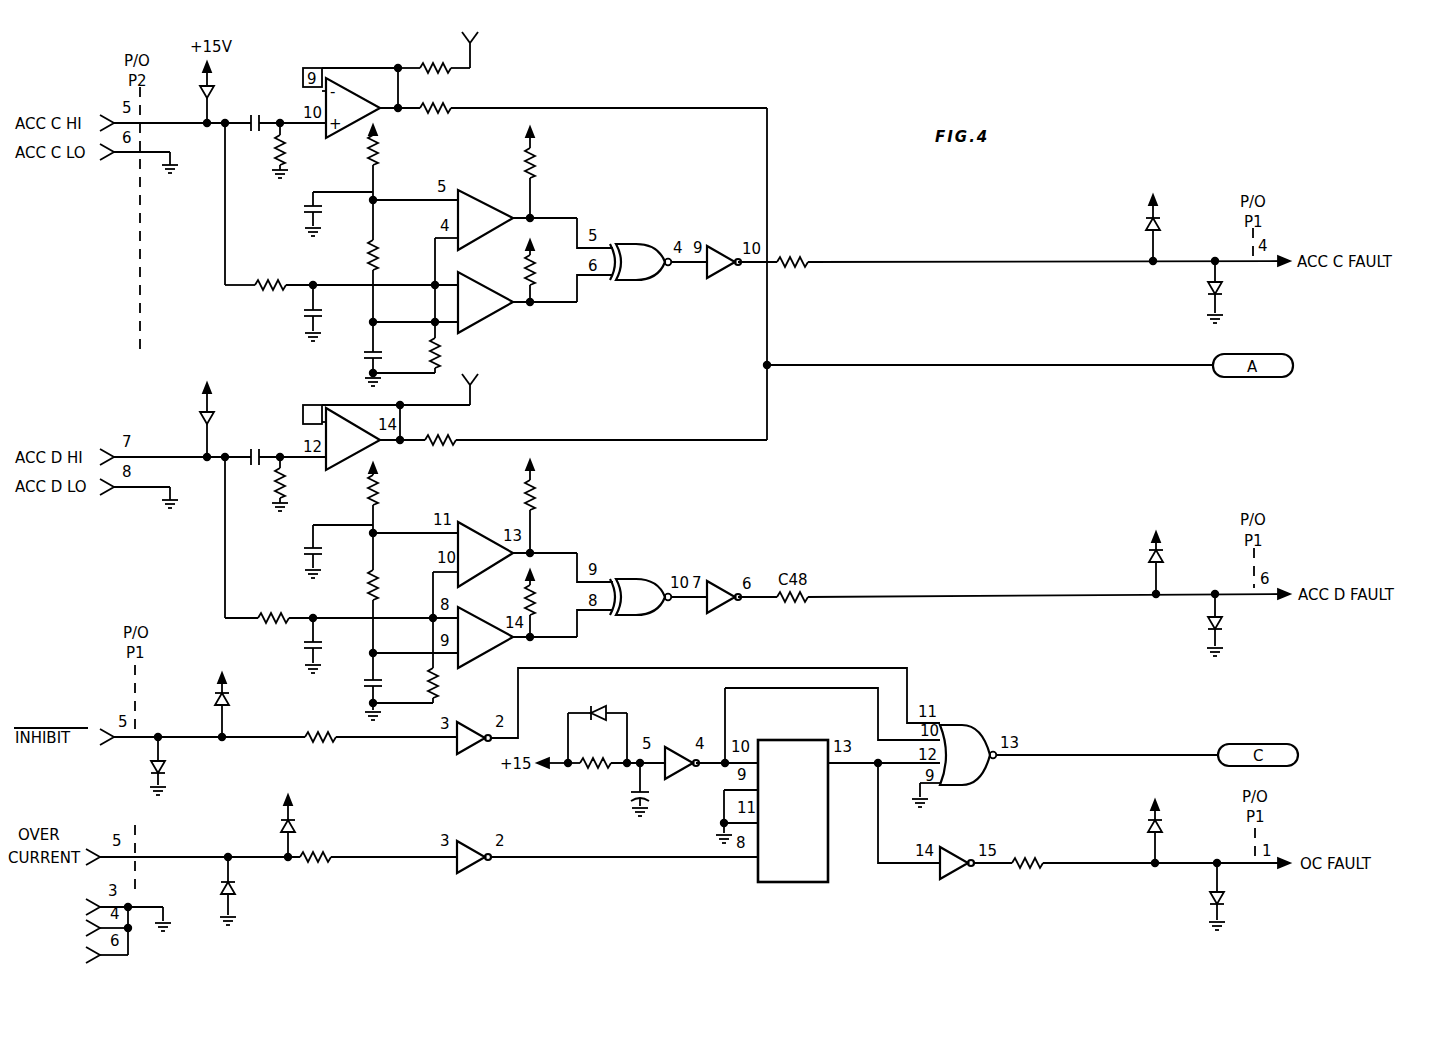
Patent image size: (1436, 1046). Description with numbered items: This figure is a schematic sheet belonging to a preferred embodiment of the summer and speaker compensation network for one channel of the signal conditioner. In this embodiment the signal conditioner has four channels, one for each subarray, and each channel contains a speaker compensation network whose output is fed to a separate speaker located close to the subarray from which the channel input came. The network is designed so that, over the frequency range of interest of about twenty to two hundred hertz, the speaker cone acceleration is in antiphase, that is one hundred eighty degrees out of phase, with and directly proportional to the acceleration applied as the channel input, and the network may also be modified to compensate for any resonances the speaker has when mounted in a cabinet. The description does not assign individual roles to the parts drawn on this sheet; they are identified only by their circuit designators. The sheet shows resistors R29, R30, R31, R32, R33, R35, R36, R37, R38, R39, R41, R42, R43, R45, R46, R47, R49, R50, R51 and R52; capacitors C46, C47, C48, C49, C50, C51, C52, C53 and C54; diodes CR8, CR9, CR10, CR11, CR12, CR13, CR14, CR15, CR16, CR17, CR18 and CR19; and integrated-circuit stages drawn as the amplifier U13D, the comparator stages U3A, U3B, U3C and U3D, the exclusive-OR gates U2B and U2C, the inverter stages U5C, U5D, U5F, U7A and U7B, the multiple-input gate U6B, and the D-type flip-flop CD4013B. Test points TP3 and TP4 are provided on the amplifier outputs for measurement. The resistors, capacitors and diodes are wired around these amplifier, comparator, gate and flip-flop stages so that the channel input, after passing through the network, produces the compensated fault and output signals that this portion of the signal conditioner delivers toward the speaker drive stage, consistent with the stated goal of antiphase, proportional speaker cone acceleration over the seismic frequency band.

The coupling capacitor C46 is at (258, 111).
The resistor R29 is at (296, 149).
The resistor R30 is at (434, 58).
The feedback resistor R31 is at (593, 98).
The test point TP4 is at (486, 49).
The resistor R32 is at (396, 157).
The capacitor C47 is at (338, 214).
The capacitor C49 is at (356, 354).
The resistor R37 is at (415, 305).
The resistor R36 is at (341, 206).
The capacitor C48 is at (329, 313).
The comparator U3B is at (485, 209).
The pull-up resistor R33 is at (554, 164).
The comparator U3A is at (485, 292).
The pull-up resistor R35 is at (554, 263).
The exclusive-OR gate U2B is at (640, 250).
The inverter U5D is at (723, 250).
The resistor R38 is at (1033, 251).
The diode CR14 is at (1170, 218).
The diode CR15 is at (1238, 290).
The diode CR8 is at (221, 408).
The operational amplifier U13D is at (338, 405).
The test point TP3 is at (469, 378).
The resistor R41 is at (596, 429).
The coupling capacitor C50 is at (258, 445).
The resistor R39 is at (296, 482).
The resistor R42 is at (397, 489).
The capacitor C51 is at (338, 551).
The resistor R46 is at (341, 540).
The capacitor C52 is at (329, 645).
The capacitor C53 is at (389, 686).
The resistor R47 is at (422, 685).
The comparator U3D is at (485, 543).
The pull-up resistor R43 is at (554, 498).
The comparator U3C is at (490, 617).
The pull-up resistor R45 is at (554, 595).
The exclusive-OR gate U2C is at (640, 585).
The inverter U5C is at (723, 585).
The diode CR16 is at (1173, 553).
The diode CR17 is at (1238, 623).
The resistor R49 is at (381, 725).
The diode CR10 is at (181, 766).
The diode CR9 is at (233, 691).
The resistor R51 is at (615, 749).
The diode CR13 is at (597, 724).
The capacitor C54 is at (656, 788).
The inverter U7B is at (679, 750).
The D flip-flop CD4013B is at (790, 825).
The NOR gate U6B is at (968, 741).
The inverter U5F is at (957, 850).
The resistor R52 is at (1151, 852).
The diode CR18 is at (1172, 821).
The diode CR19 is at (1240, 895).
The resistor R50 is at (378, 868).
The diode CR12 is at (250, 891).
The diode CR11 is at (306, 814).
The inverter U7A is at (471, 844).